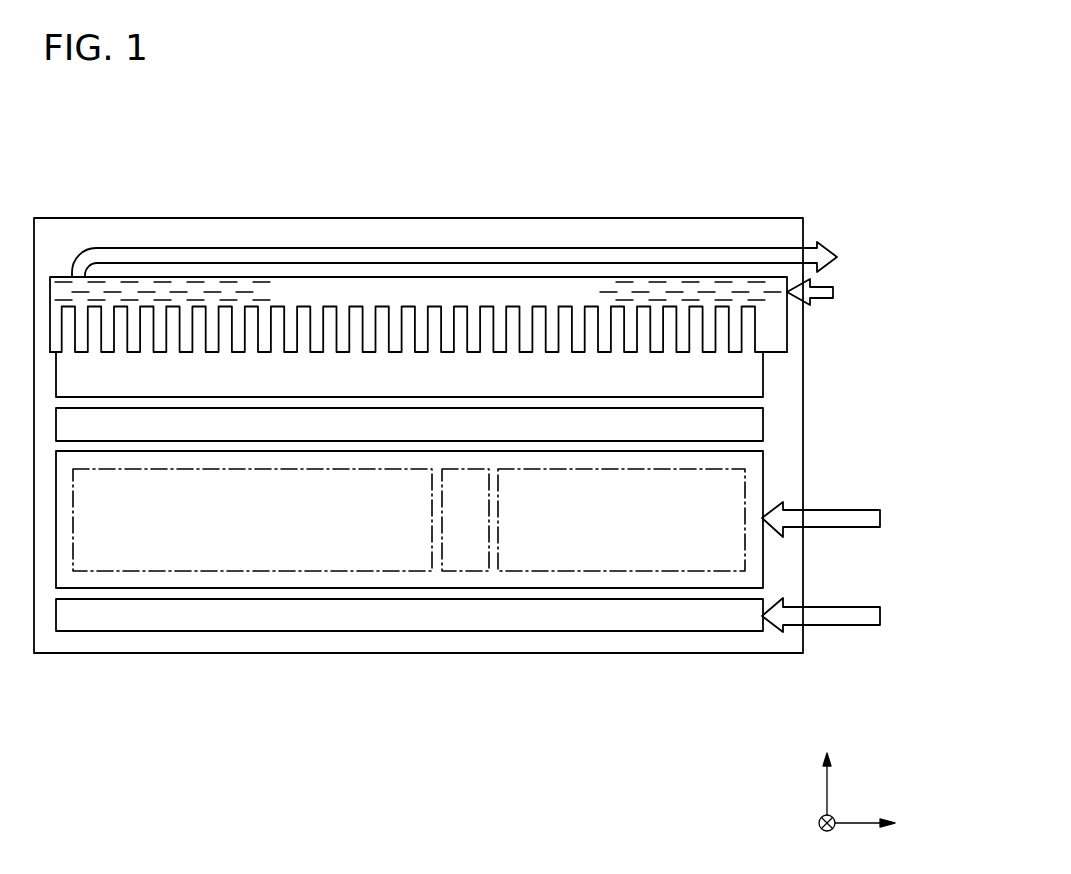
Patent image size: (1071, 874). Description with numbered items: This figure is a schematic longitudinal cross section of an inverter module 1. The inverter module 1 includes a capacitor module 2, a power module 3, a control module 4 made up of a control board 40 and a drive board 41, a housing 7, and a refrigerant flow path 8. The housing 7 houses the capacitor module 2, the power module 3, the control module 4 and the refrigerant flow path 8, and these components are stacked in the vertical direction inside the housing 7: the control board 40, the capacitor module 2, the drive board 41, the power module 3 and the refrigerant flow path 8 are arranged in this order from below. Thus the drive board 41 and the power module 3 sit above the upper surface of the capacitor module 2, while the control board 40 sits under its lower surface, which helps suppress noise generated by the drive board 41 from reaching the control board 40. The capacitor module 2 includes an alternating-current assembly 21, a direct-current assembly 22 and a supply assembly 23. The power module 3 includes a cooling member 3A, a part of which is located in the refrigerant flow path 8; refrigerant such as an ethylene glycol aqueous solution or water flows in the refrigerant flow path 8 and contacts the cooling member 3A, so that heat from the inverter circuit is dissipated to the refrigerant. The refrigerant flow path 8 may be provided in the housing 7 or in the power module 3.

The inverter module 1 is at (760, 174).
The capacitor module 2 is at (753, 472).
The alternating-current assembly 21 is at (215, 571).
The direct-current assembly 22 is at (618, 571).
The supply assembly 23 is at (468, 571).
The power module 3 is at (758, 370).
The cooling member 3A is at (334, 296).
The control module 4 is at (473, 565).
The control board 40 is at (707, 624).
The drive board 41 is at (753, 422).
The housing 7 is at (147, 218).
The refrigerant flow path 8 is at (782, 332).